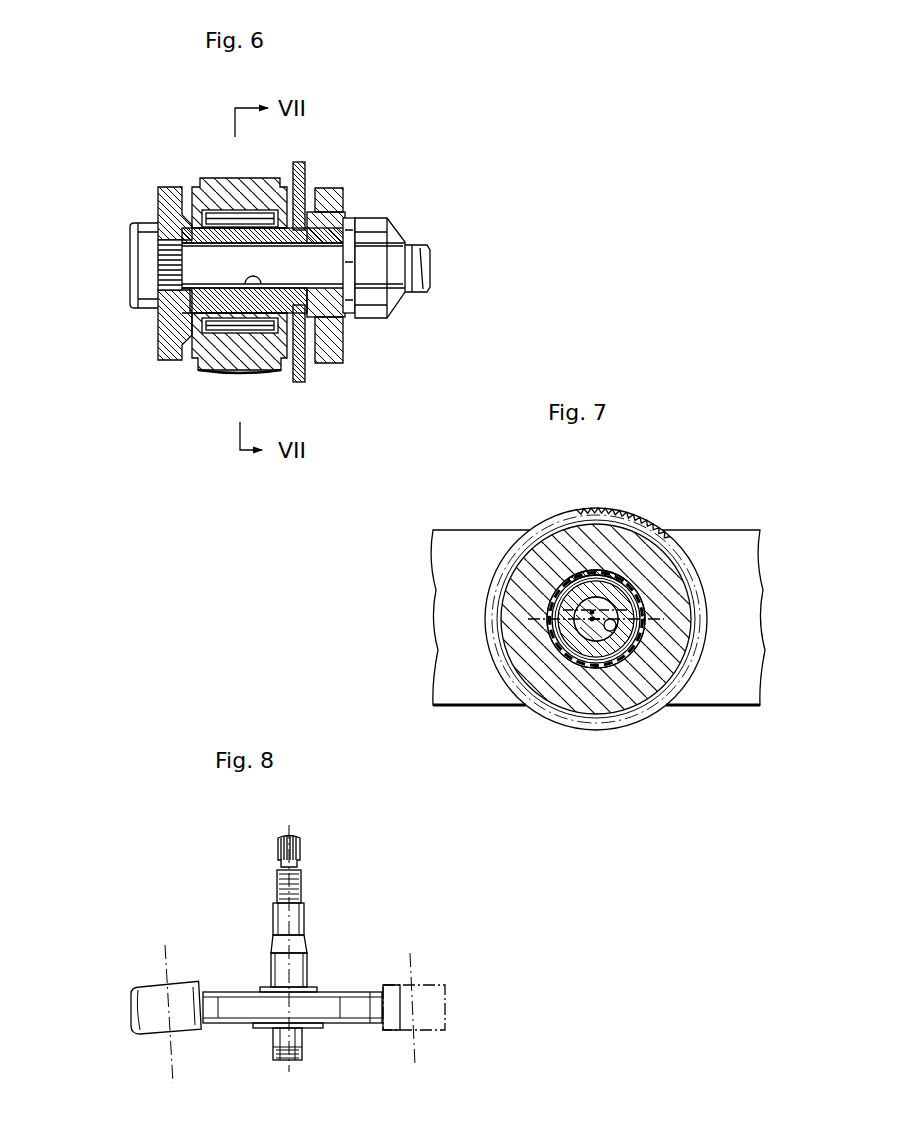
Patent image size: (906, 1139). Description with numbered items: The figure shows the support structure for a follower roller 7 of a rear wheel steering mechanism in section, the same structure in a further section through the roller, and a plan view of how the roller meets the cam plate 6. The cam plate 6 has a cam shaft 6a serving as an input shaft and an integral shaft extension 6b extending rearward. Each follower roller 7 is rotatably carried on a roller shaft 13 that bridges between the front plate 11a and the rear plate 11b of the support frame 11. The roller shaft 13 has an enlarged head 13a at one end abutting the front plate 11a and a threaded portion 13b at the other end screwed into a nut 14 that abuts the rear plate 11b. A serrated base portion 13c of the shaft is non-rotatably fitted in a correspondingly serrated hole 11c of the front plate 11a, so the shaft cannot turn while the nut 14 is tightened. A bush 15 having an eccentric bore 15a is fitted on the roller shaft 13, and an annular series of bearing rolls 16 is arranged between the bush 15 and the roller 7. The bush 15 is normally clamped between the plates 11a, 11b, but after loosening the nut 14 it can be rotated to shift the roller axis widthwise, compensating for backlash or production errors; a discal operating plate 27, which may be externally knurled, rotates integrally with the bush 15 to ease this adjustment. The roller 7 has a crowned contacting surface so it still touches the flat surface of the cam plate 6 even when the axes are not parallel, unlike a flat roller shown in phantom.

In FIG. 8, the cam plate 6 is at (332, 1015).
In FIG. 8, the cam shaft 6a is at (308, 920).
In FIG. 8, the shaft extension 6b is at (277, 1038).
In FIG. 6, the follower roller 7 is at (245, 190).
In FIG. 7, the follower roller 7 is at (625, 545).
In FIG. 8, the follower roller 7 is at (150, 997).
In FIG. 6, the support frame 11 is at (333, 185).
In FIG. 6, the front plate 11a is at (172, 205).
In FIG. 6, the rear plate 11b is at (343, 200).
In FIG. 7, the rear plate 11b is at (455, 540).
In FIG. 6, the serrated hole 11c is at (158, 255).
In FIG. 6, the roller shaft 13 is at (203, 268).
In FIG. 7, the roller shaft 13 is at (556, 577).
In FIG. 6, the enlarged head 13a is at (138, 265).
In FIG. 6, the threaded portion 13b is at (431, 266).
In FIG. 6, the serrated base portion 13c is at (170, 305).
In FIG. 6, the nut 14 is at (390, 232).
In FIG. 6, the bush 15 is at (207, 303).
In FIG. 7, the bush 15 is at (585, 648).
In FIG. 6, the eccentric bore 15a is at (250, 285).
In FIG. 7, the eccentric bore 15a is at (607, 632).
In FIG. 6, the bearing rolls 16 is at (212, 370).
In FIG. 7, the bearing rolls 16 is at (628, 575).
In FIG. 6, the discal operating plate 27 is at (300, 165).
In FIG. 7, the discal operating plate 27 is at (550, 524).